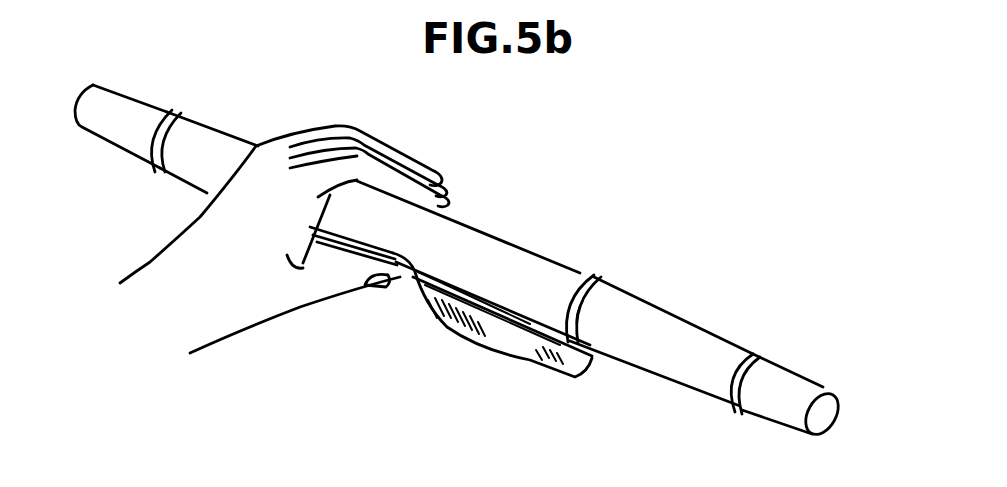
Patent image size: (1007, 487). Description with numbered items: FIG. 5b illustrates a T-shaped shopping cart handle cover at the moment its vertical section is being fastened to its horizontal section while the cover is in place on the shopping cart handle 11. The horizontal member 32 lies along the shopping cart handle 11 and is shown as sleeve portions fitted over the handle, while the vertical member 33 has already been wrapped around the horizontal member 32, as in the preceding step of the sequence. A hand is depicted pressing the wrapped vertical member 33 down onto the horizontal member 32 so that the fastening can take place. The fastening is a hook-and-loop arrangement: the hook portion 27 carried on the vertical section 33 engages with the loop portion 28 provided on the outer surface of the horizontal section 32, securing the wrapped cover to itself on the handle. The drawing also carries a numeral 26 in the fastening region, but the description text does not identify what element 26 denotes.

The shopping cart handle 11 is at (127, 113).
The horizontal member 32 is at (208, 145).
The vertical member 33 is at (498, 261).
The contacts 26 is at (582, 298).
The hook portion 27 is at (521, 342).
The loop portion 28 is at (488, 307).